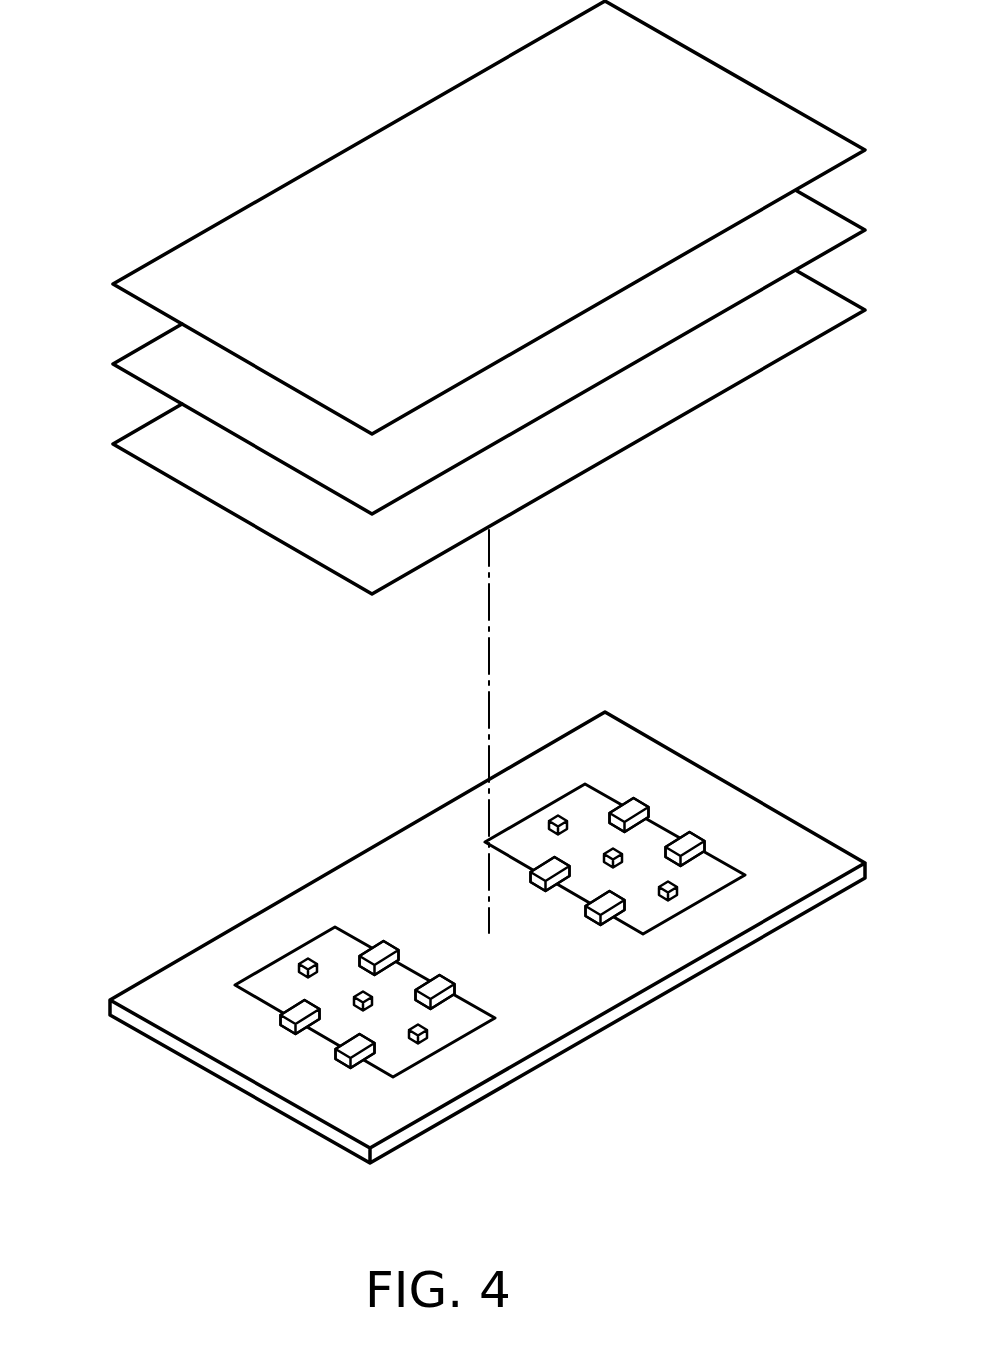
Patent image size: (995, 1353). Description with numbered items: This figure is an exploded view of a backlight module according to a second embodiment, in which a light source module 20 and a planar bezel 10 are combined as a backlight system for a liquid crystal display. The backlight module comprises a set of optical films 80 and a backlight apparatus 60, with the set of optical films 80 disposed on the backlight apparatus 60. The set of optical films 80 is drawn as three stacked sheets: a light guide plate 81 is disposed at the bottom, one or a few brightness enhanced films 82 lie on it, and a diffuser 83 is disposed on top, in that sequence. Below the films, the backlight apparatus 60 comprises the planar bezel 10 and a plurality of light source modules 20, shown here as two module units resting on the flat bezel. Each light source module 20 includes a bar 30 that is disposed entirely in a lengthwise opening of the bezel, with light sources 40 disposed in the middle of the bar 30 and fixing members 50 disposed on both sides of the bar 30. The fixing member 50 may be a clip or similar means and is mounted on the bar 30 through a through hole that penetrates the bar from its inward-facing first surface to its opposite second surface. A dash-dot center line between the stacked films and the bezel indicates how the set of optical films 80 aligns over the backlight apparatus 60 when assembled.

The planar bezel 10 is at (445, 837).
The light source module 20 is at (256, 727).
The bar 30 is at (285, 987).
The light source 40 is at (362, 990).
The fixing member 50 is at (385, 943).
The backlight apparatus 60 is at (83, 1160).
The set of optical films 80 is at (85, 632).
The light guide plate 81 is at (161, 434).
The brightness enhanced film 82 is at (161, 354).
The diffuser 83 is at (161, 274).